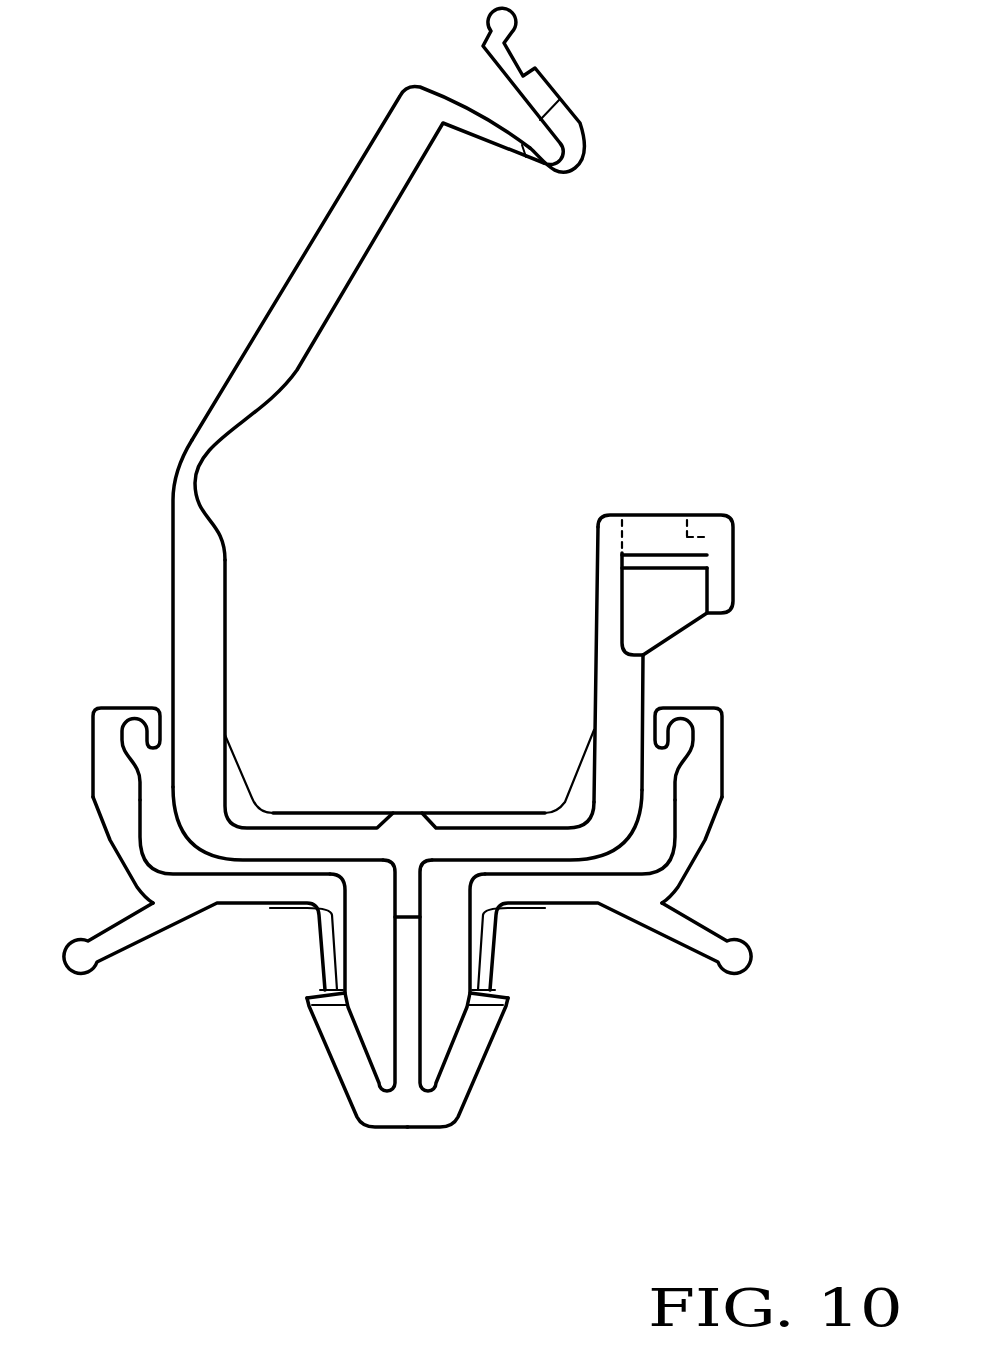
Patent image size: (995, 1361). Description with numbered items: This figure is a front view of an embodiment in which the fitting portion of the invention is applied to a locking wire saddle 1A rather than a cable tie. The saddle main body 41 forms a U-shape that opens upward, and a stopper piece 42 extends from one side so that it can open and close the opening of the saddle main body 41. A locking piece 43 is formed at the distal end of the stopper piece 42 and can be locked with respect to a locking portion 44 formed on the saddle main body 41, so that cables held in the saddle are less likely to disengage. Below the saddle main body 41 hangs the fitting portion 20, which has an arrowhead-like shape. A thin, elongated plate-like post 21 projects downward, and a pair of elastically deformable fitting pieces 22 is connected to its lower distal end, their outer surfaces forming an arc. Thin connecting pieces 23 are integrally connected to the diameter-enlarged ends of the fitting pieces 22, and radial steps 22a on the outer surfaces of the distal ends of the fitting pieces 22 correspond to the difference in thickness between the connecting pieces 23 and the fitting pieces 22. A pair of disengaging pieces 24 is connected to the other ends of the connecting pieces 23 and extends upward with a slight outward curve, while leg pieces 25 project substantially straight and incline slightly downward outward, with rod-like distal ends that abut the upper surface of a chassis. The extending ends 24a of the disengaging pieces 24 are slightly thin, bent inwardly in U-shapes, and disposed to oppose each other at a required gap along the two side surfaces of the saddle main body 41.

The locking wire saddle 1A is at (585, 377).
The fitting portion 20 is at (668, 1044).
The post 21 is at (400, 1038).
The fitting pieces 22 is at (460, 1065).
The steps 22a is at (503, 993).
The connecting pieces 23 is at (488, 948).
The disengaging pieces 24 is at (112, 835).
The extending ends 24a is at (147, 723).
The leg pieces 25 is at (128, 930).
The saddle main body 41 is at (600, 683).
The stopper piece 42 is at (340, 255).
The locking piece 43 is at (572, 141).
The locking portion 44 is at (670, 518).